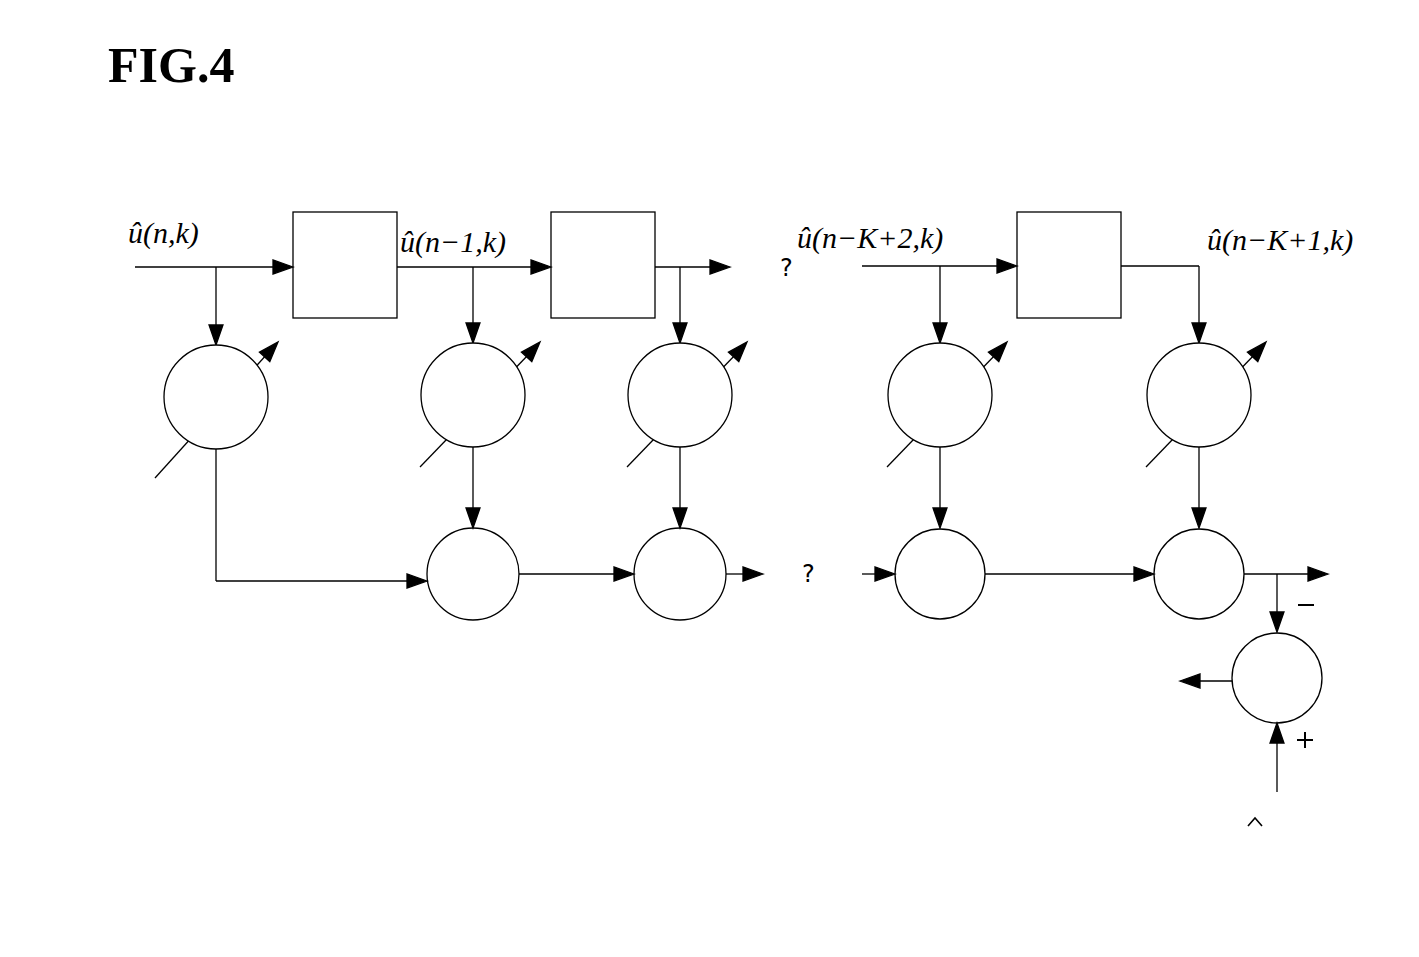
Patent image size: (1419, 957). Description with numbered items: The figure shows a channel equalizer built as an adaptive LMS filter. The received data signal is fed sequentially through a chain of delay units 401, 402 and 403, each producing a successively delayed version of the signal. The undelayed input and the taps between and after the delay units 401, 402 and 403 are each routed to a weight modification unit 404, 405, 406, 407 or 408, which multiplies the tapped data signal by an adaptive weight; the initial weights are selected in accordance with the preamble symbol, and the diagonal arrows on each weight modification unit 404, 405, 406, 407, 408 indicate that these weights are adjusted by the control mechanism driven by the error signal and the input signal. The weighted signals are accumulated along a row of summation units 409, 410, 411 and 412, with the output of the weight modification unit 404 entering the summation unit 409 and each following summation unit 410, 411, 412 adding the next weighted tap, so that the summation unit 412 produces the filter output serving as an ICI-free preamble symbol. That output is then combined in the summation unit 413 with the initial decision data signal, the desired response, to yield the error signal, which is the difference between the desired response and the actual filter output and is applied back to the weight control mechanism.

The delay unit 401 is at (337, 211).
The delay unit 402 is at (600, 211).
The delay unit 403 is at (1062, 211).
The weight modification unit 404 is at (236, 350).
The weight modification unit 405 is at (493, 350).
The weight modification unit 406 is at (700, 350).
The weight modification unit 407 is at (960, 350).
The weight modification unit 408 is at (1218, 345).
The summation unit 409 is at (493, 530).
The summation unit 410 is at (700, 530).
The summation unit 411 is at (958, 530).
The summation unit 412 is at (1218, 530).
The summation unit 413 is at (1318, 652).